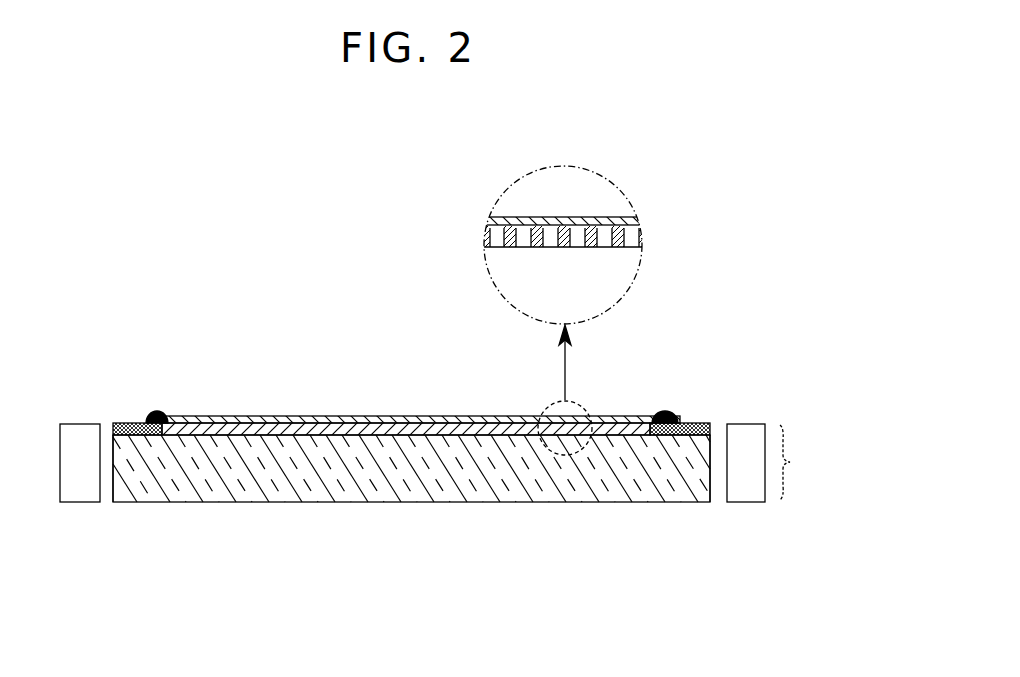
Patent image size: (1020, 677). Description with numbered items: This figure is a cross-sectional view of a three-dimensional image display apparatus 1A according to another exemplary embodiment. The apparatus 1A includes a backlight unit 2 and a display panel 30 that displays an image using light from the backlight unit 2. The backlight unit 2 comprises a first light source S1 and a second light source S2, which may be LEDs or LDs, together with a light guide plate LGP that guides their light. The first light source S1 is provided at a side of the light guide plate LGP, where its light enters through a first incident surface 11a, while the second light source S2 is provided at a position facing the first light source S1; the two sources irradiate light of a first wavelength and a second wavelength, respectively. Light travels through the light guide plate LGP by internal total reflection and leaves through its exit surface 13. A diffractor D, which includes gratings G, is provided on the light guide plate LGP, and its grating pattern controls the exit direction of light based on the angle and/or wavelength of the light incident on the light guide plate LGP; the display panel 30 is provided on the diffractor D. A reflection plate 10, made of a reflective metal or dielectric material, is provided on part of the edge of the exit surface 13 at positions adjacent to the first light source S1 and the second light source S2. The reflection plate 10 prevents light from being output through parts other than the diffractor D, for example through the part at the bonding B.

The 3D image display apparatus 1A is at (262, 305).
The light guide plate LGP is at (413, 495).
The first incident surface 11a is at (122, 473).
The exit surface 13 is at (453, 423).
The display panel 30 is at (268, 416).
The reflection plate 10 is at (133, 427).
The bonding B is at (160, 411).
The diffractor D is at (337, 422).
The gratings G is at (563, 232).
The first light source S1 is at (79, 502).
The second light source S2 is at (745, 502).
The backlight unit 2 is at (794, 462).